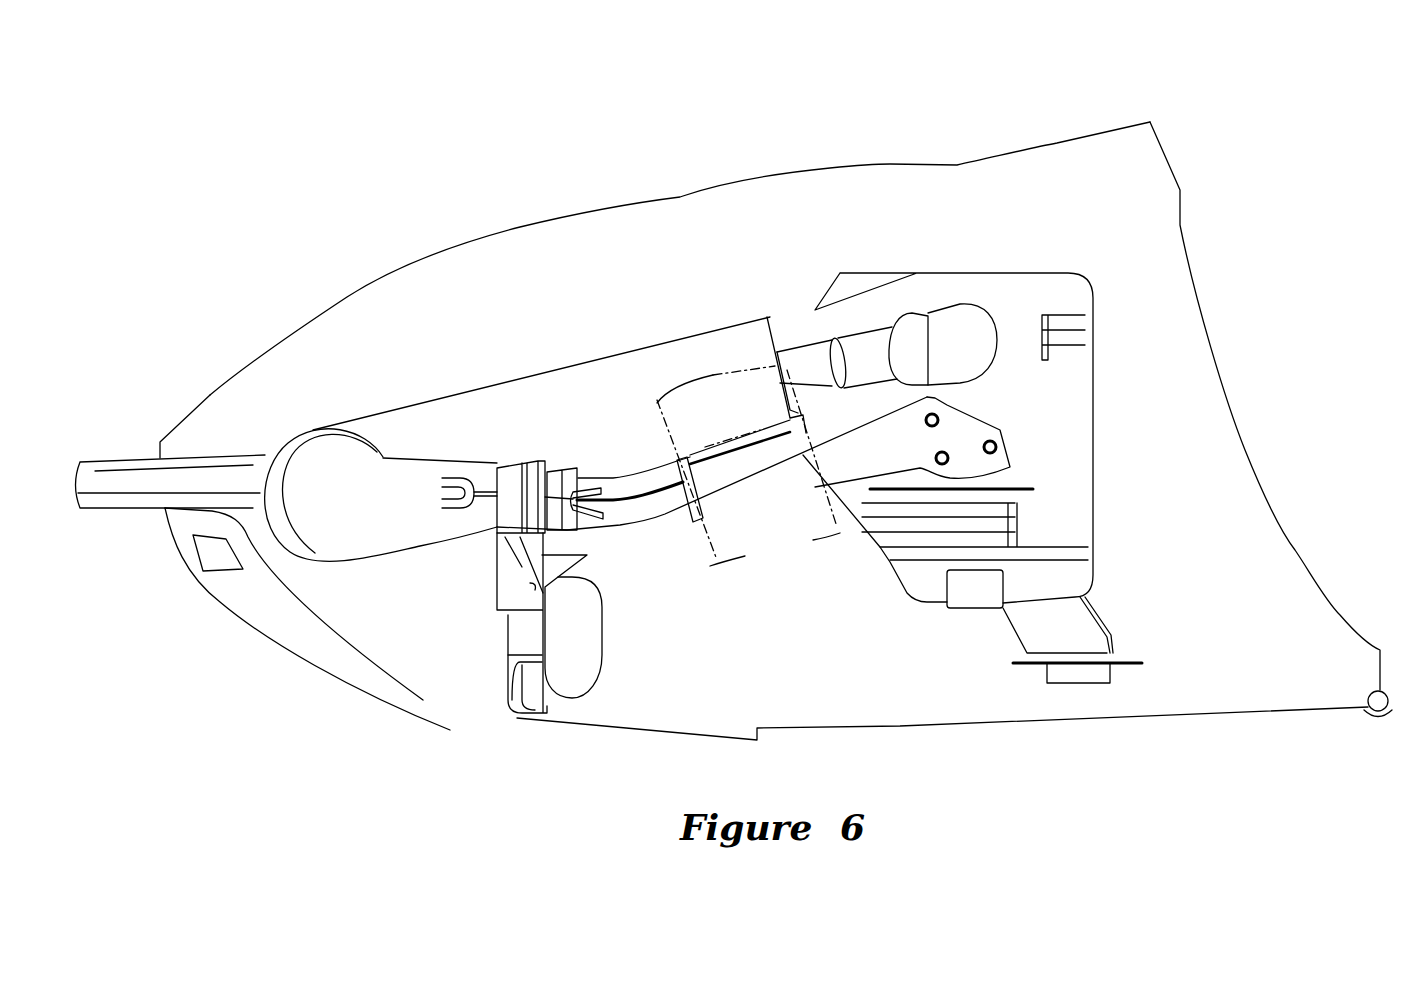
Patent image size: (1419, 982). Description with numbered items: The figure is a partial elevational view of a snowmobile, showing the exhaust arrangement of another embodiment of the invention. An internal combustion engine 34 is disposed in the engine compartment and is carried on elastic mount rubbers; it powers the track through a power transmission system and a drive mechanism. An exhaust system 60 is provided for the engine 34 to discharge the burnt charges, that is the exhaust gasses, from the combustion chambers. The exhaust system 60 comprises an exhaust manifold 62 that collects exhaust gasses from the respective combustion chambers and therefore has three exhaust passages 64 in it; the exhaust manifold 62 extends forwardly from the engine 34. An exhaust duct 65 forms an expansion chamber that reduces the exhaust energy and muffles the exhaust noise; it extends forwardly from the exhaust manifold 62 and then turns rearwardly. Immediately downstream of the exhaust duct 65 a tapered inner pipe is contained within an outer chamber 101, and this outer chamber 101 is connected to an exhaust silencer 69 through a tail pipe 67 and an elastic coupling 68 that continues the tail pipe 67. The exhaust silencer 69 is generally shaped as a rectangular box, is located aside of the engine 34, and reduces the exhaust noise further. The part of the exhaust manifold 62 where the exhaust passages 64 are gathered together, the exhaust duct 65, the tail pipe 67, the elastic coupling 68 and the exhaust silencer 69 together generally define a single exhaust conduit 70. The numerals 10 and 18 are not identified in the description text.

The vehicle body 10 is at (656, 186).
The cowl upper surface 18 is at (542, 217).
The internal combustion engine 34 is at (838, 527).
The exhaust system 60 is at (438, 591).
The exhaust manifold 62 is at (635, 531).
The exhaust passages 64 is at (673, 513).
The exhaust duct 65 is at (383, 537).
The tail pipe 67 is at (803, 343).
The elastic coupling 68 is at (945, 320).
The exhaust silencer 69 is at (1095, 447).
The exhaust conduit 70 is at (450, 393).
The outer chamber 101 is at (622, 345).